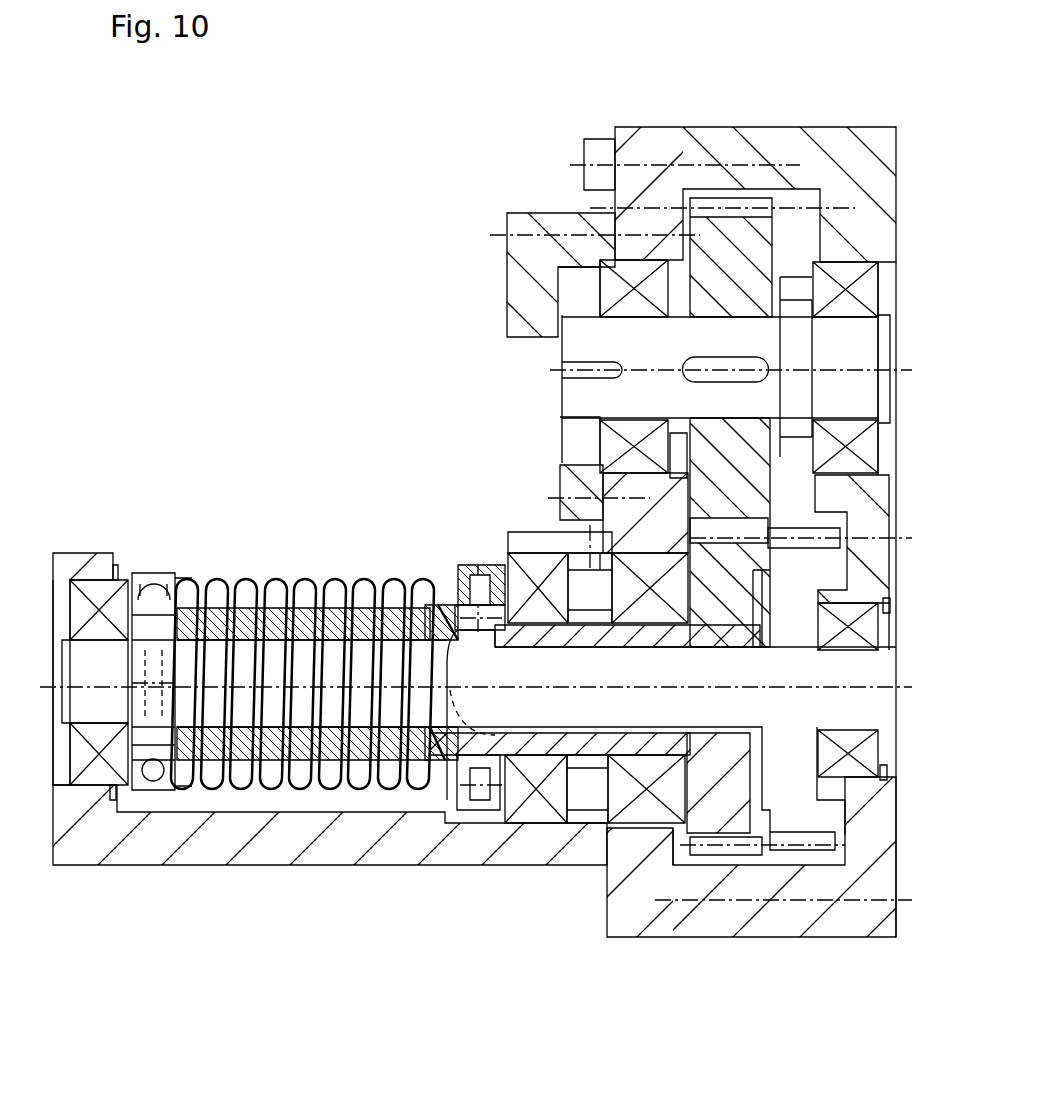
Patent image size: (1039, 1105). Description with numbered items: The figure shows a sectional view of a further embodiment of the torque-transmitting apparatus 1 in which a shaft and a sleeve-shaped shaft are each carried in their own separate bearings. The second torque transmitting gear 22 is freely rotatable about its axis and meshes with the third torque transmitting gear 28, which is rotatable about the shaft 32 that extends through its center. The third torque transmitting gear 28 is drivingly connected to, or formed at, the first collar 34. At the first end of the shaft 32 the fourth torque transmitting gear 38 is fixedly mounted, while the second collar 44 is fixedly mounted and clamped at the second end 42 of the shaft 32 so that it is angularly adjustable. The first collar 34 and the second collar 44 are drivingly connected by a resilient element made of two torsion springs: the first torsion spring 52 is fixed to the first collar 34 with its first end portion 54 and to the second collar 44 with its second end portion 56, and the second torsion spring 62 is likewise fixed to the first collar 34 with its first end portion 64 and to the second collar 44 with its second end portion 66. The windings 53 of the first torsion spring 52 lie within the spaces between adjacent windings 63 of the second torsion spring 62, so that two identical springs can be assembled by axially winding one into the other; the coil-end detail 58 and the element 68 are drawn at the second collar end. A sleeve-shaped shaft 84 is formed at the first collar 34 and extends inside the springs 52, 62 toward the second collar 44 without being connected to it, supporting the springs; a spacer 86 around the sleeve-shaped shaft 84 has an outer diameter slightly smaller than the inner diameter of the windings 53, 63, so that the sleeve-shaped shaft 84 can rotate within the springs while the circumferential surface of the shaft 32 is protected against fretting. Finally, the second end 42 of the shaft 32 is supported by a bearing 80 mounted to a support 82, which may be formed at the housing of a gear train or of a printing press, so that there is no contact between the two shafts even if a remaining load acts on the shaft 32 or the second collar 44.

The apparatus 1 is at (540, 150).
The second torque transmitting gear 22 is at (746, 235).
The third torque transmitting gear 28 is at (724, 825).
The shaft 32 is at (597, 705).
The first collar 34 is at (500, 565).
The fourth torque transmitting gear 38 is at (792, 810).
The second end 42 is at (53, 745).
The second collar 44 is at (165, 575).
The first torsion spring 52 is at (340, 580).
The windings 53 is at (222, 862).
The first end portion 54 is at (462, 812).
The second end portion 56 is at (190, 580).
The spring end 58 is at (215, 580).
The second torsion spring 62 is at (308, 580).
The windings 63 is at (340, 800).
The first end portion 64 is at (447, 580).
The second end portion 66 is at (176, 792).
The ball 68 is at (142, 790).
The bearing 80 is at (94, 775).
The support 82 is at (392, 830).
The sleeve-shaped shaft 84 is at (440, 580).
The spacer 86 is at (432, 862).